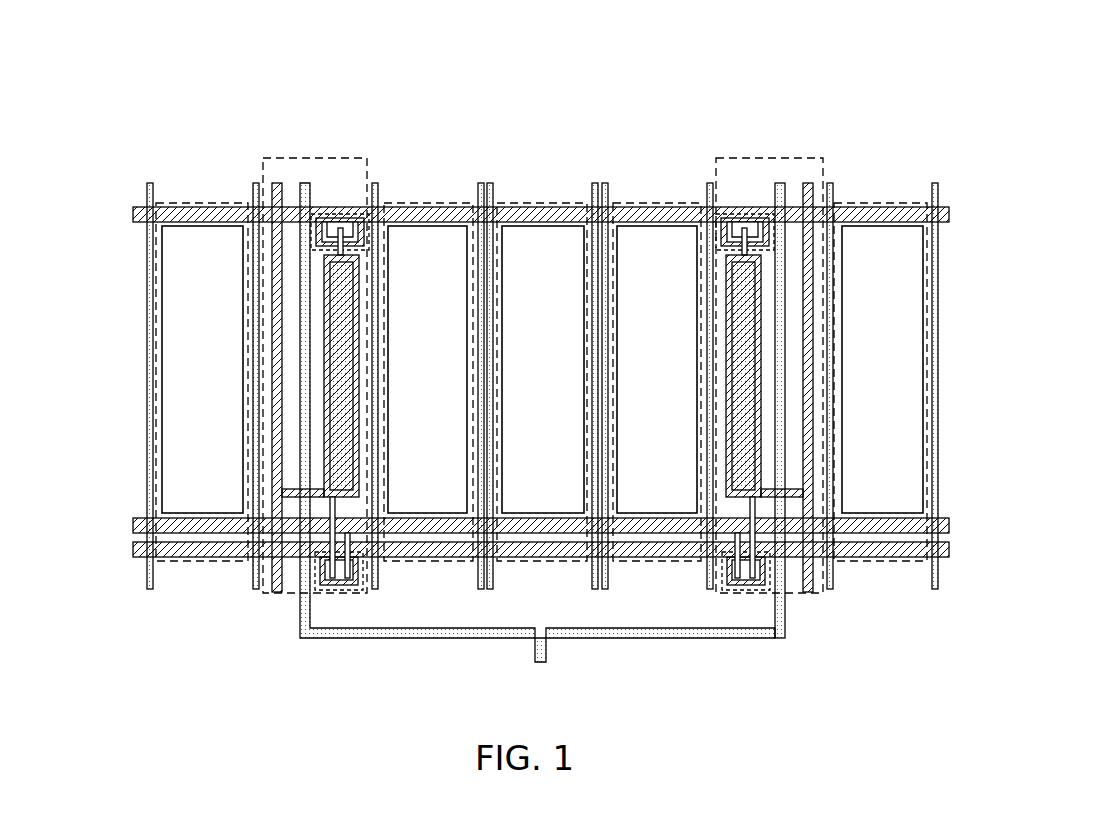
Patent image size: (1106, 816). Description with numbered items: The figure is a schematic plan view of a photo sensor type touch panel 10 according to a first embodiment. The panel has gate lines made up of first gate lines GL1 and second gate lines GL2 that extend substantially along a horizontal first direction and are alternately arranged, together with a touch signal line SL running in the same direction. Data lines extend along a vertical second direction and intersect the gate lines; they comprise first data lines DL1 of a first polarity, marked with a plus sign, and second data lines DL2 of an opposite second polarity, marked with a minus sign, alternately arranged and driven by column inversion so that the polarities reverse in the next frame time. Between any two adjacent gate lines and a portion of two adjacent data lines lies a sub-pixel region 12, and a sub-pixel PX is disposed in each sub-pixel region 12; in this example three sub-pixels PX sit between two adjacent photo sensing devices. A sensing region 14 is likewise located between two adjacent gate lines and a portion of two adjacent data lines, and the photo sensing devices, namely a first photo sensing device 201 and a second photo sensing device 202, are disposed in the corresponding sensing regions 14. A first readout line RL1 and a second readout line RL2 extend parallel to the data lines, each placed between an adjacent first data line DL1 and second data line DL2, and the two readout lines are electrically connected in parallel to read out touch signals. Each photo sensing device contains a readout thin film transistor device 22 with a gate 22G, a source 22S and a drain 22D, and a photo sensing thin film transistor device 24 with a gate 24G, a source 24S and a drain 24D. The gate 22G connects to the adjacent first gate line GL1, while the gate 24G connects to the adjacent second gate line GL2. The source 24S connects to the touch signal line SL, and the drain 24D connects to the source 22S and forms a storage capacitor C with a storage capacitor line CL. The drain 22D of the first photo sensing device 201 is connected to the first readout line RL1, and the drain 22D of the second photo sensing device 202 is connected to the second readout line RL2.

The photo sensor type touch panel 10 is at (1015, 93).
The sub-pixel region 12 is at (203, 203).
The sensing region 14 is at (543, 335).
The first photo sensing device 201 is at (329, 200).
The second photo sensing device 202 is at (756, 200).
The readout thin film transistor device 22 is at (542, 249).
The gate of readout thin film transistor device 22G is at (544, 189).
The drain of readout thin film transistor device 22D is at (545, 180).
The source of readout thin film transistor device 22S is at (542, 185).
The photo sensing thin film transistor device 24 is at (542, 576).
The gate of photo sensing thin film transistor device 24G is at (542, 582).
The drain of photo sensing thin film transistor device 24D is at (534, 562).
The source of photo sensing thin film transistor device 24S is at (558, 580).
The storage capacitor line CL is at (325, 430).
The storage capacitor C is at (365, 475).
The sub-pixel PX is at (542, 369).
The first gate line GL1 is at (133, 214).
The second gate line GL2 is at (133, 549).
The touch signal line SL is at (133, 525).
The first data line DL1 is at (573, 347).
The second data line DL2 is at (504, 343).
The first readout line RL1 is at (300, 615).
The second readout line RL2 is at (785, 615).